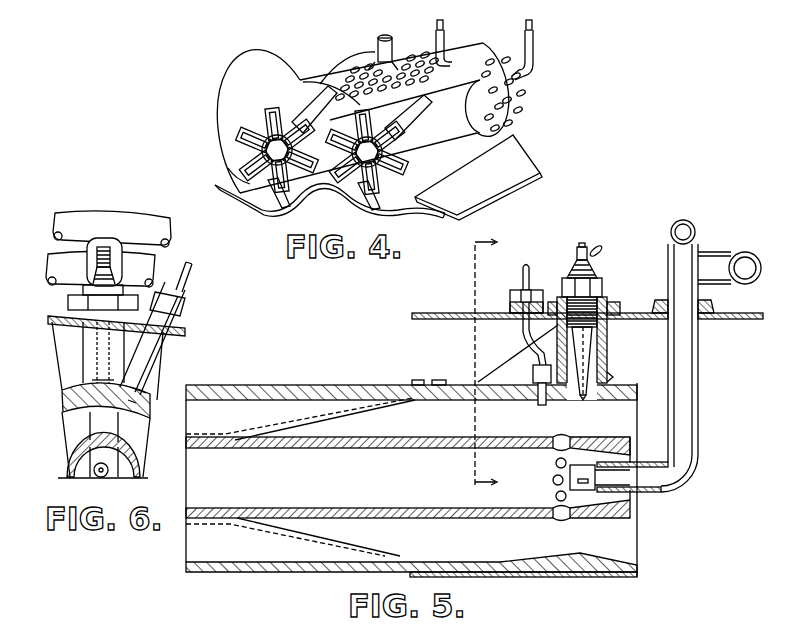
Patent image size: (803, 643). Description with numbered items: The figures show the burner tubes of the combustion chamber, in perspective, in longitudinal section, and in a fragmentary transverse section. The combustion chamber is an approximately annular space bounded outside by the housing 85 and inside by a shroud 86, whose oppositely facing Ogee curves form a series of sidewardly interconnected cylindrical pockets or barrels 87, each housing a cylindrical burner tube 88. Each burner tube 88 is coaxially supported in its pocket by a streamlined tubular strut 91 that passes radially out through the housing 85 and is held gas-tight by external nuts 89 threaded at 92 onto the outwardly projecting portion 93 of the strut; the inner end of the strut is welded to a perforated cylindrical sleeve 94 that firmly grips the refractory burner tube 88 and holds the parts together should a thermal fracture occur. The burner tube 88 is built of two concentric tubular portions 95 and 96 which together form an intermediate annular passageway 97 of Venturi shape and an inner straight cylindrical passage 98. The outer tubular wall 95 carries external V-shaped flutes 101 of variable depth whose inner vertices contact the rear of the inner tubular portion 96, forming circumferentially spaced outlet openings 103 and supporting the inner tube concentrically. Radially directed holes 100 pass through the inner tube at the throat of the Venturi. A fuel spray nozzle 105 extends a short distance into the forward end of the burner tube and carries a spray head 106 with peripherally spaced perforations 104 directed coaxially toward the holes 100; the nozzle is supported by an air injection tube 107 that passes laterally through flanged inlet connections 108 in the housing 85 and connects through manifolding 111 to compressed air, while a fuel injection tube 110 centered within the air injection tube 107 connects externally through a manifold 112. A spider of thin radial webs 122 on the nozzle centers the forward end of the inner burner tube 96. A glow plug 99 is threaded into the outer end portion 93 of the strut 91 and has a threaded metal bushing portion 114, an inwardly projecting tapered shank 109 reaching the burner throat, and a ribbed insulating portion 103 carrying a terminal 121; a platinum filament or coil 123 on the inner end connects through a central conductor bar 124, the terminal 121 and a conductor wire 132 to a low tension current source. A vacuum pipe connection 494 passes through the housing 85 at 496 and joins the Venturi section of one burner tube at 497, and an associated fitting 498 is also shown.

In FIG. 6, the housing 85 is at (52, 318).
In FIG. 5, the housing 85 is at (436, 313).
In FIG. 4, the shroud 86 is at (418, 203).
In FIG. 4, the pockets or barrels 87 is at (270, 195).
In FIG. 5, the pockets or barrels 87 is at (462, 344).
In FIG. 4, the burner tube 88 is at (300, 85).
In FIG. 5, the burner tube 88 is at (330, 488).
In FIG. 6, the external nuts 89 is at (68, 301).
In FIG. 5, the external nuts 89 is at (620, 306).
In FIG. 4, the tubular strut 91 is at (372, 43).
In FIG. 6, the tubular strut 91 is at (95, 356).
In FIG. 5, the tubular strut 91 is at (522, 352).
In FIG. 5, the threads 92 is at (603, 296).
In FIG. 5, the outwardly projecting portion 93 is at (554, 302).
In FIG. 4, the perforated cylindrical sleeve 94 is at (330, 70).
In FIG. 6, the perforated cylindrical sleeve 94 is at (80, 388).
In FIG. 5, the perforated cylindrical sleeve 94 is at (420, 384).
In FIG. 4, the outer tubular portion 95 is at (290, 110).
In FIG. 6, the outer tubular portion 95 is at (58, 398).
In FIG. 5, the outer tubular portion 95 is at (340, 385).
In FIG. 4, the inner tubular portion 96 is at (292, 175).
In FIG. 6, the inner tubular portion 96 is at (72, 442).
In FIG. 5, the inner tubular portion 96 is at (390, 437).
In FIG. 4, the intermediate annular passageway 97 is at (382, 188).
In FIG. 5, the intermediate annular passageway 97 is at (418, 437).
In FIG. 4, the inner straight cylindrical passage 98 is at (255, 190).
In FIG. 5, the inner straight cylindrical passage 98 is at (365, 449).
In FIG. 5, the glow plug 99 is at (577, 265).
In FIG. 5, the radially directed holes 100 is at (563, 520).
In FIG. 4, the V-shaped flutes 101 is at (252, 124).
In FIG. 5, the V-shaped flutes 101 is at (243, 432).
In FIG. 4, the outlet openings 103 is at (242, 145).
In FIG. 5, the outlet openings 103 is at (598, 278).
In FIG. 5, the perforations 104 is at (560, 483).
In FIG. 5, the fuel spray nozzle 105 is at (603, 516).
In FIG. 6, the spray head 106 is at (101, 477).
In FIG. 5, the spray head 106 is at (556, 466).
In FIG. 5, the air injection tube 107 is at (652, 462).
In FIG. 5, the flanged inlet connections 108 is at (712, 308).
In FIG. 5, the tapered shank 109 is at (613, 377).
In FIG. 5, the fuel injection tube 110 is at (640, 492).
In FIG. 6, the manifolding 111 is at (145, 270).
In FIG. 5, the manifolding 111 is at (746, 252).
In FIG. 6, the manifold 112 is at (117, 230).
In FIG. 5, the manifold 112 is at (671, 234).
In FIG. 5, the threaded metal bushing portion 114 is at (570, 276).
In FIG. 5, the terminal 121 is at (590, 242).
In FIG. 5, the webs 122 is at (612, 445).
In FIG. 5, the filament or coil 123 is at (584, 400).
In FIG. 5, the central conductor bar 124 is at (600, 342).
In FIG. 5, the conductor wire 132 is at (601, 253).
In FIG. 6, the vacuum pipe connection 494 is at (165, 360).
In FIG. 5, the vacuum pipe connection 494 is at (524, 267).
In FIG. 5, the housing connection 496 is at (511, 300).
In FIG. 6, the Venturi connection 497 is at (125, 408).
In FIG. 5, the Venturi connection 497 is at (540, 405).
In FIG. 6, the lead nut 498 is at (176, 306).